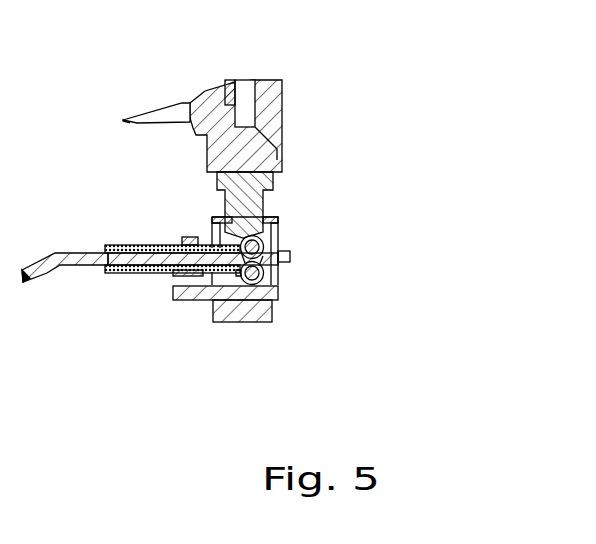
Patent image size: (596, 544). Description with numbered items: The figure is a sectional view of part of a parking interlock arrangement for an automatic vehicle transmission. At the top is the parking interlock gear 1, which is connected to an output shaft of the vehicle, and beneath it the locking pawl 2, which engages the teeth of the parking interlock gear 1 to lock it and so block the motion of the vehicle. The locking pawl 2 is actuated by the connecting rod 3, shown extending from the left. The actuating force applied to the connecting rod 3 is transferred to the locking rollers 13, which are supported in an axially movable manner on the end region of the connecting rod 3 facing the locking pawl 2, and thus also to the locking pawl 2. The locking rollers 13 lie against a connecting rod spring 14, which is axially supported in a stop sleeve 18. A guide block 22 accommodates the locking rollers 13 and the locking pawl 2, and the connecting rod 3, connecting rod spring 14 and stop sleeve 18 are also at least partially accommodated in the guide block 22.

The parking interlock gear 1 is at (256, 123).
The locking pawl 2 is at (275, 175).
The connecting rod 3 is at (50, 278).
The locking rollers 13 is at (257, 243).
The connecting rod spring 14 is at (210, 258).
The stop sleeve 18 is at (150, 278).
The guide block 22 is at (268, 303).